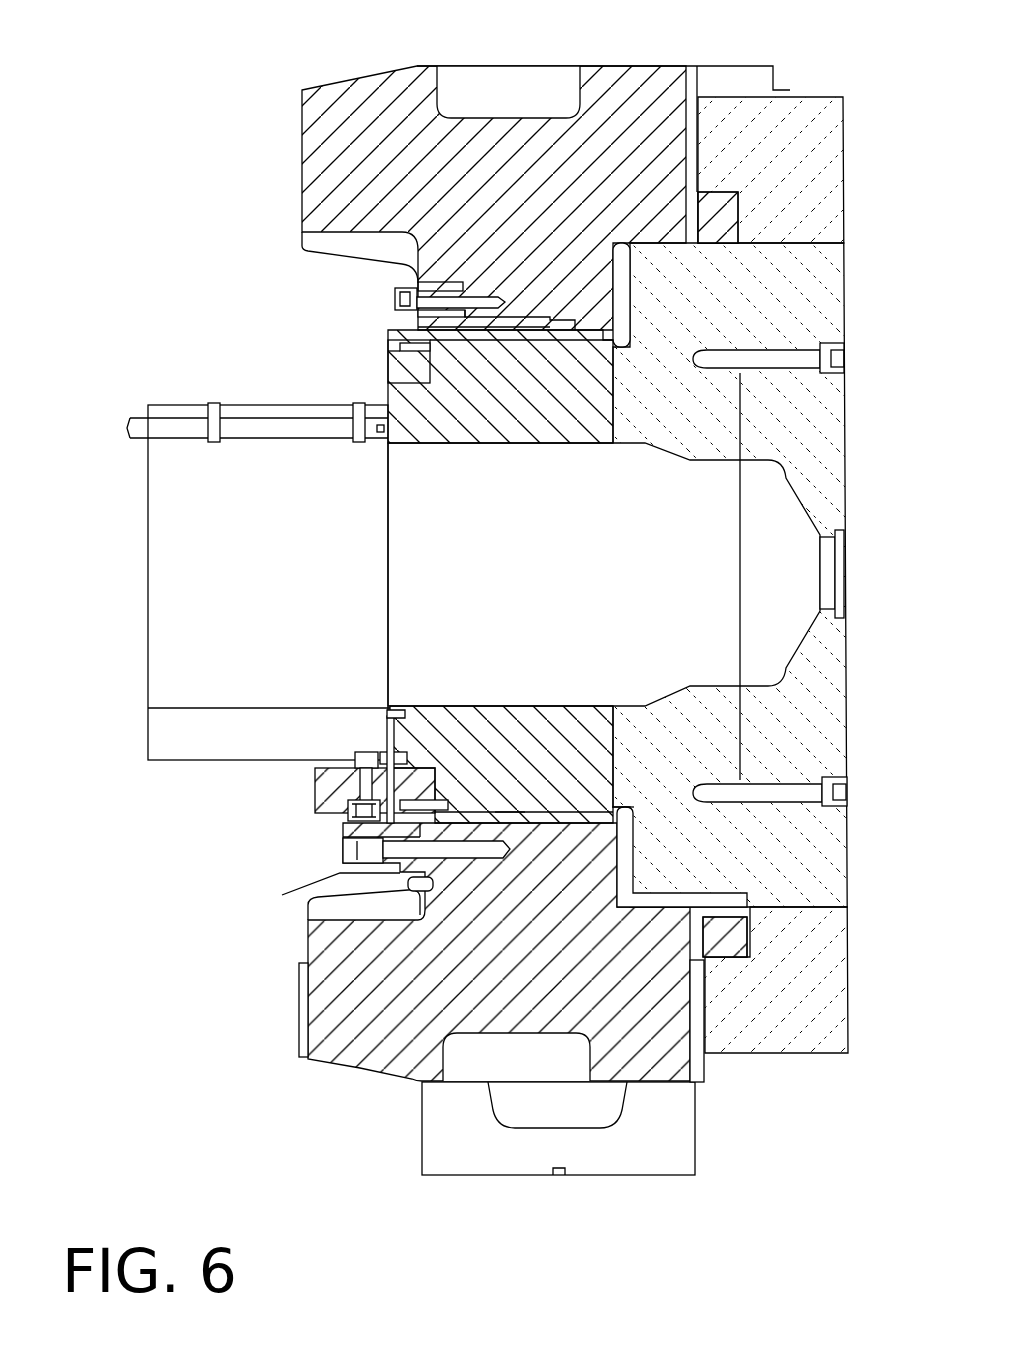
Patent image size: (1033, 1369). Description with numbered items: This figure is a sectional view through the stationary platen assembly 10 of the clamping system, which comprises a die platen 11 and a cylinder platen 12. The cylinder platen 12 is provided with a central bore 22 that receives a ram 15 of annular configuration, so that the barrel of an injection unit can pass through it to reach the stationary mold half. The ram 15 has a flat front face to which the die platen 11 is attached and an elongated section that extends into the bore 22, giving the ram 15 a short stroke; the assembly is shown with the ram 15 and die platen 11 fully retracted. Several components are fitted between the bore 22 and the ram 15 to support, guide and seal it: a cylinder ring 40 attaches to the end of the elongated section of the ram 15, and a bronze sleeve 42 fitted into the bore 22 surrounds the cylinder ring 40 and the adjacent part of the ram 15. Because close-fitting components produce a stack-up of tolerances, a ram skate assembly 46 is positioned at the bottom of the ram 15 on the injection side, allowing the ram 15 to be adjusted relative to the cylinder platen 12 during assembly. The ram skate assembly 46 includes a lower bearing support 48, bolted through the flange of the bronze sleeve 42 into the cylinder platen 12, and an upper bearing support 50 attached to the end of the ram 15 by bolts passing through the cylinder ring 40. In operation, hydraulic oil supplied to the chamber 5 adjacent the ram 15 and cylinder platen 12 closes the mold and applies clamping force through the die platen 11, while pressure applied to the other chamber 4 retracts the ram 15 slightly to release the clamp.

The stationary platen assembly 10 is at (240, 109).
The die platen 11 is at (828, 137).
The cylinder platen 12 is at (330, 178).
The ram 15 is at (707, 445).
The bore 22 is at (607, 343).
The cylinder ring 40 is at (403, 362).
The bronze sleeve 42 is at (395, 320).
The ram skate assembly 46 is at (300, 827).
The lower bearing support 48 is at (365, 868).
The upper bearing support 50 is at (338, 790).
The chamber 4 is at (510, 805).
The chamber 5 is at (622, 805).